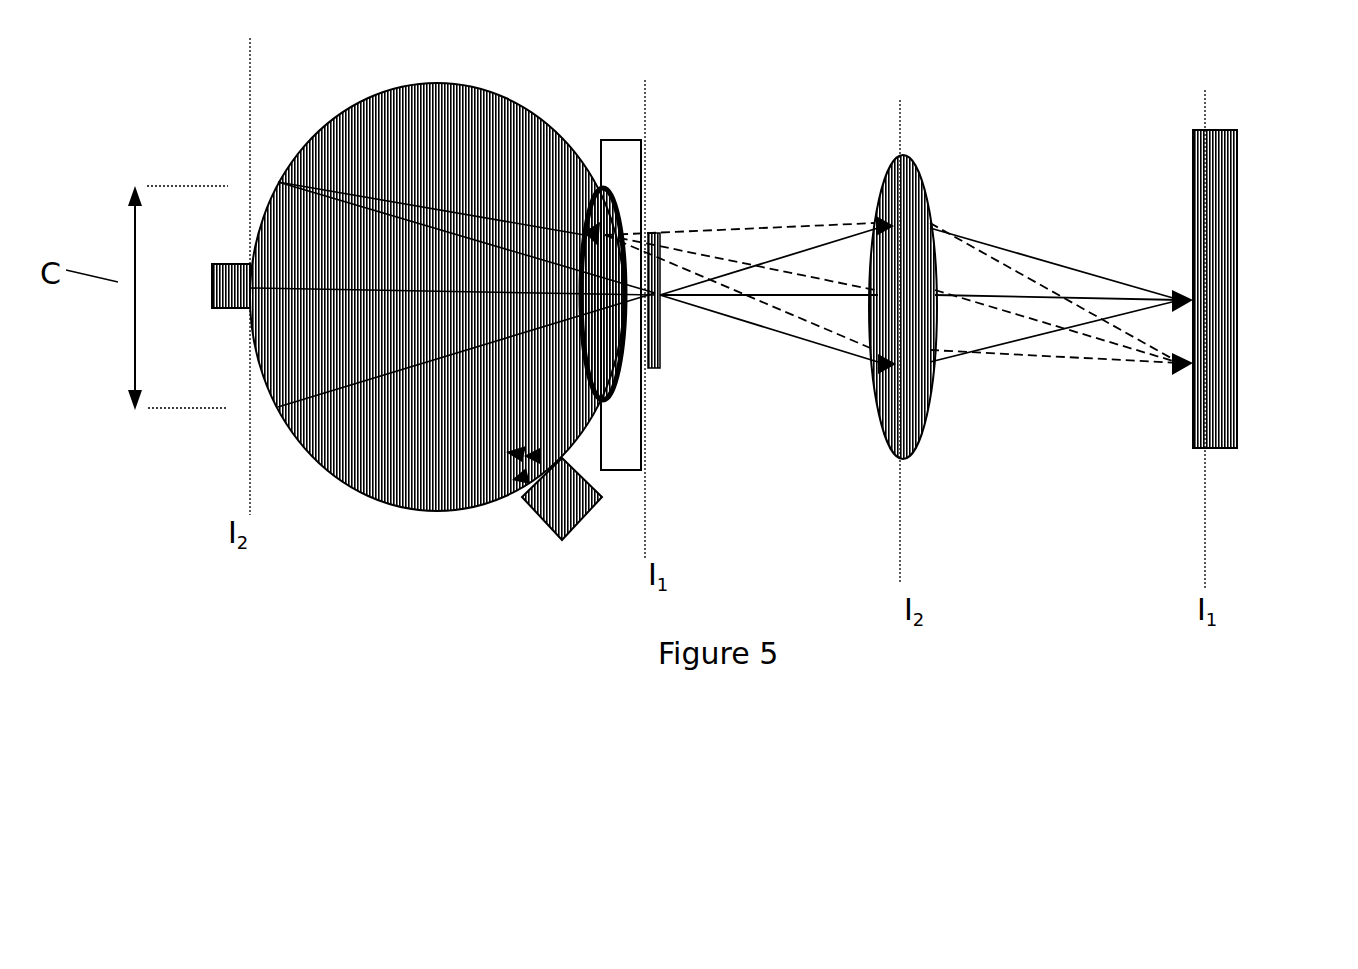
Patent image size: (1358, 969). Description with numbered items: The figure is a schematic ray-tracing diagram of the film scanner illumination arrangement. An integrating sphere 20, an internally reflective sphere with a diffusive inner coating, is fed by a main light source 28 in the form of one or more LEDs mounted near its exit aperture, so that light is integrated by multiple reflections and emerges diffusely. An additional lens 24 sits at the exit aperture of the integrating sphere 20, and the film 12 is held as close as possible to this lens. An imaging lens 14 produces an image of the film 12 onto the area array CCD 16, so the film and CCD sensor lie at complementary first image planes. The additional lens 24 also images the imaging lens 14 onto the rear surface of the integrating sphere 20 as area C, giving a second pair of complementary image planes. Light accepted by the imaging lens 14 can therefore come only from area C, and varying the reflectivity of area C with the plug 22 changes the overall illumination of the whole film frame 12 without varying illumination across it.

The film 12 is at (683, 403).
The imaging lens 14 is at (938, 463).
The area array CCD 16 is at (1245, 448).
The integrating sphere 20 is at (398, 510).
The plug 22 is at (213, 237).
The additional lens 24 is at (600, 178).
The main light source 28 is at (540, 535).